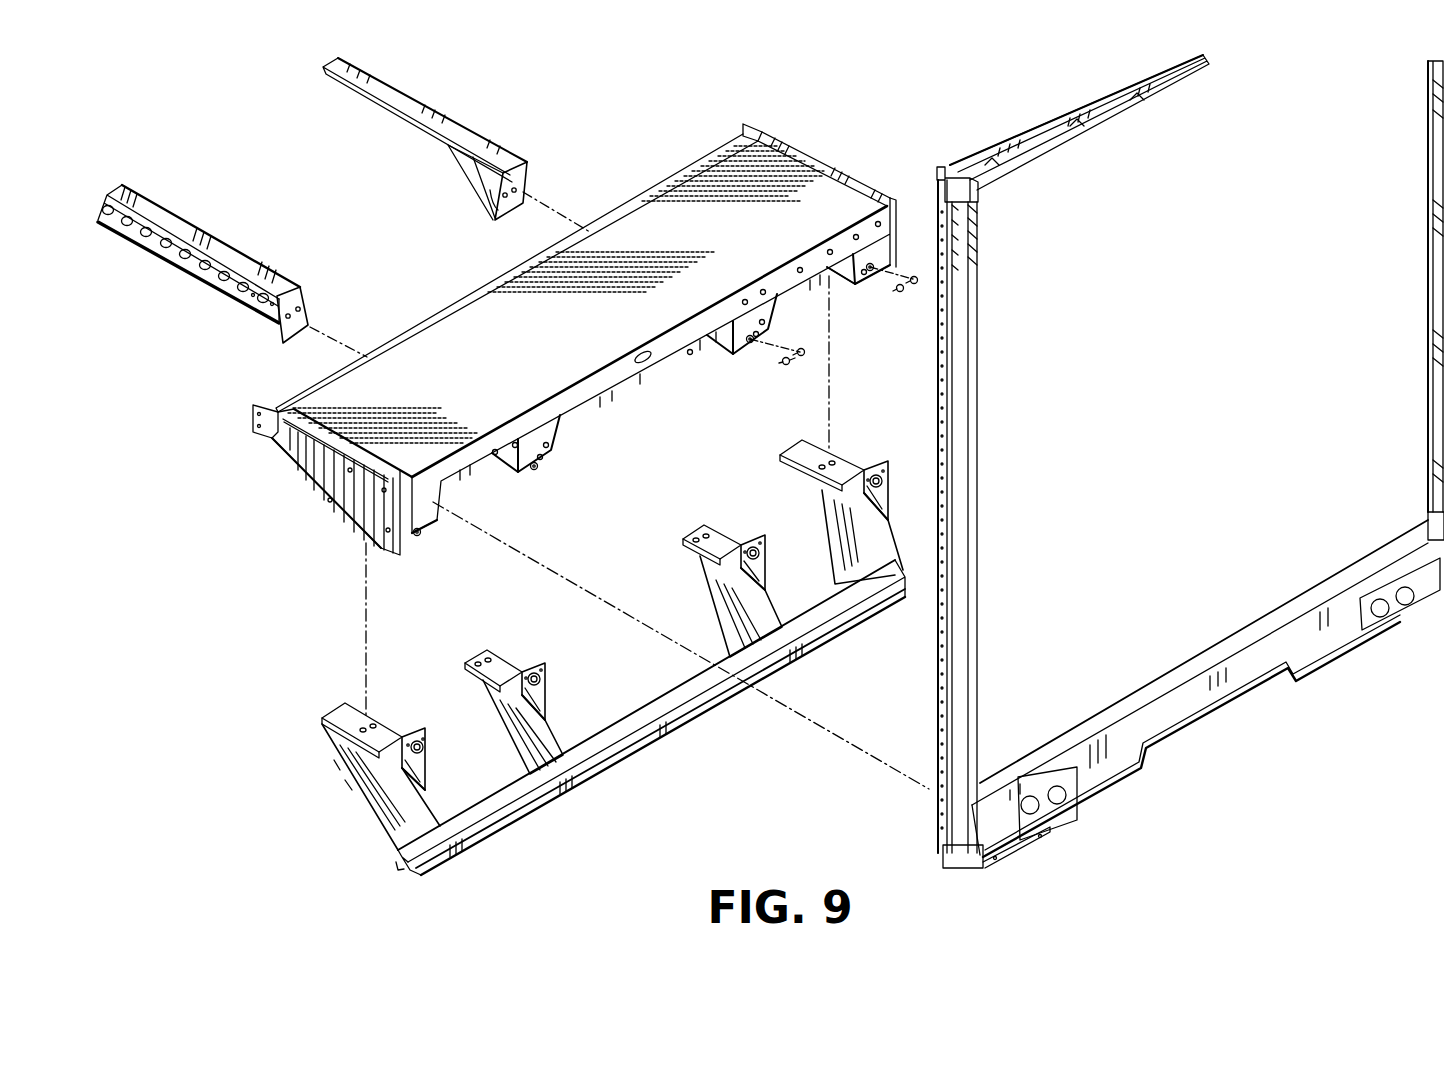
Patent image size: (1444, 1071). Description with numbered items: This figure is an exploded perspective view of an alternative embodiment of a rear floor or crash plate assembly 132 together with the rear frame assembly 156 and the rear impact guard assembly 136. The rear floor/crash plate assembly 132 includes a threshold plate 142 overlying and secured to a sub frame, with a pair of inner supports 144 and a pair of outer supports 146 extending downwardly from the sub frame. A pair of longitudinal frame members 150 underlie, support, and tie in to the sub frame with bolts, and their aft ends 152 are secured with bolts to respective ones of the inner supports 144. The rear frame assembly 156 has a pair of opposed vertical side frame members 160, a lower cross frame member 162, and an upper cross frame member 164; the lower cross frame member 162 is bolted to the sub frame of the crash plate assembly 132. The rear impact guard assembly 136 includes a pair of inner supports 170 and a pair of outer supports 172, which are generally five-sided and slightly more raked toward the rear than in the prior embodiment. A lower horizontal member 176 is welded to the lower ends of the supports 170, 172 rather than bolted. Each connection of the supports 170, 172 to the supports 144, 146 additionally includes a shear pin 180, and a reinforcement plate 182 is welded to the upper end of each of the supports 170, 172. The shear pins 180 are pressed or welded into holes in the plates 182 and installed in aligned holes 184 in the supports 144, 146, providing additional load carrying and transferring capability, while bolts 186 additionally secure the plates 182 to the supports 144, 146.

The rear floor/crash plate assembly 132 is at (593, 340).
The rear impact guard assembly 136 is at (624, 638).
The threshold plate 142 is at (518, 348).
The inner supports 144 is at (762, 328).
The outer supports 146 is at (885, 228).
The longitudinal frame members 150 is at (410, 104).
The aft ends 152 is at (528, 180).
The rear frame assembly 156 is at (1190, 461).
The vertical side frame members 160 is at (1428, 268).
The lower cross frame member 162 is at (1244, 634).
The upper cross frame member 164 is at (1092, 126).
The inner supports 170 is at (776, 608).
The outer supports 172 is at (362, 795).
The lower horizontal member 176 is at (655, 744).
The shear pin 180 is at (884, 485).
The reinforcement plate 182 is at (735, 585).
The holes 184 is at (870, 272).
The bolts 186 is at (804, 364).